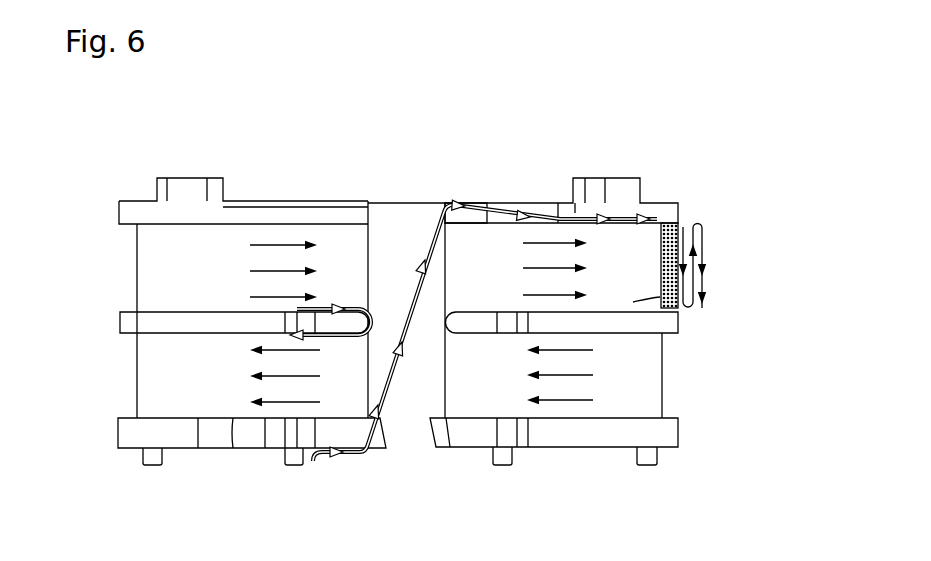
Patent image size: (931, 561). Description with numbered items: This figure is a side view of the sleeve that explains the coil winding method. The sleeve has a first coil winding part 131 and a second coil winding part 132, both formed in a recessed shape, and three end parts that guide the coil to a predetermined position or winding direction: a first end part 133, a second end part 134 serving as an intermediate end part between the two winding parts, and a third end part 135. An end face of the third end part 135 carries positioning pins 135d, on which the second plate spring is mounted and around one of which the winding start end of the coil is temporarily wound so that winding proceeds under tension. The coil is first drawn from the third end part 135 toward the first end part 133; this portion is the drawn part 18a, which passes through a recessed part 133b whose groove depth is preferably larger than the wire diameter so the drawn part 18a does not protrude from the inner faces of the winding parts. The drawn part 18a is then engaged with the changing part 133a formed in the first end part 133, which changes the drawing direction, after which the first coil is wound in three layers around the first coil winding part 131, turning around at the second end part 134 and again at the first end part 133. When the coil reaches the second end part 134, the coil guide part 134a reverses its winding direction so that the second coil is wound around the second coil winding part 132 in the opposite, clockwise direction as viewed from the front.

The drawn part 18a is at (417, 278).
The recessed part 133b is at (402, 218).
The changing part 133a is at (472, 204).
The first end part 133 is at (662, 205).
The first coil winding part 131 is at (688, 309).
The second end part 134 is at (638, 317).
The second coil winding part 132 is at (637, 385).
The third end part 135 is at (640, 437).
The positioning pins 135d is at (160, 467).
The coil guide part 134a is at (443, 323).